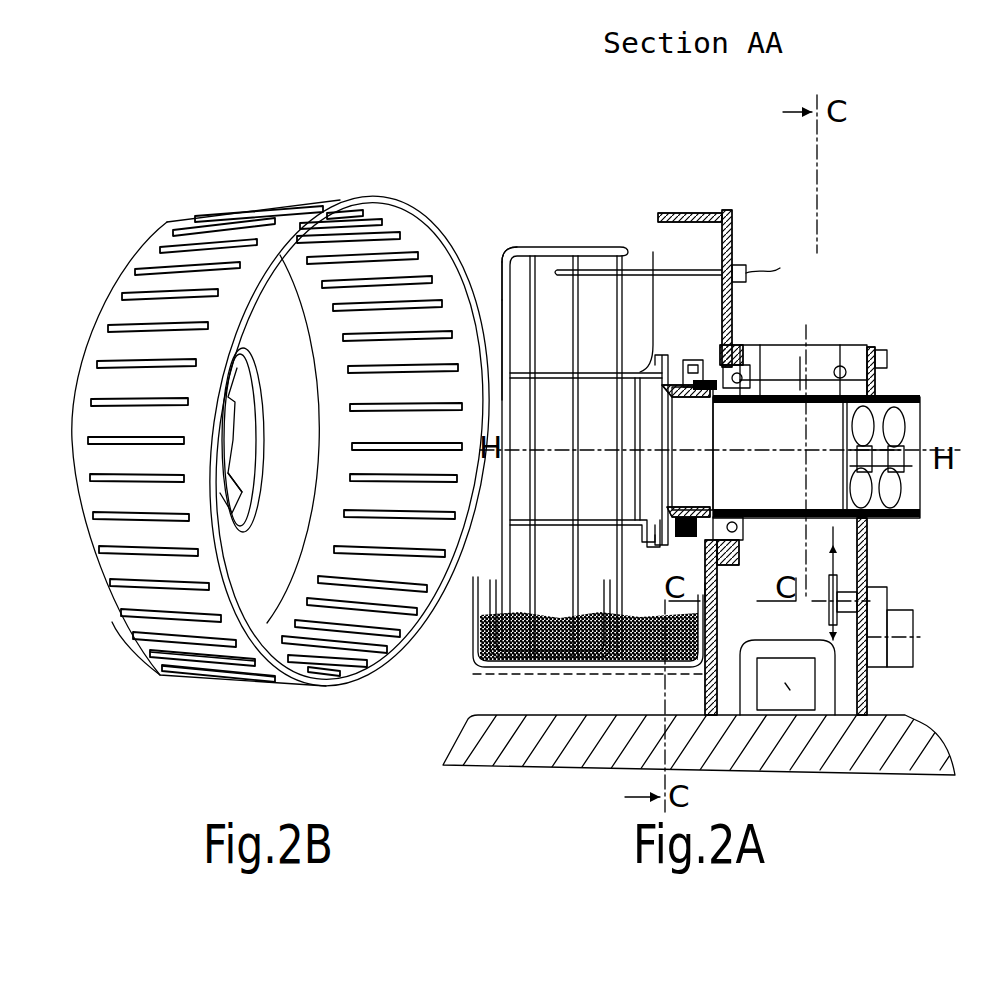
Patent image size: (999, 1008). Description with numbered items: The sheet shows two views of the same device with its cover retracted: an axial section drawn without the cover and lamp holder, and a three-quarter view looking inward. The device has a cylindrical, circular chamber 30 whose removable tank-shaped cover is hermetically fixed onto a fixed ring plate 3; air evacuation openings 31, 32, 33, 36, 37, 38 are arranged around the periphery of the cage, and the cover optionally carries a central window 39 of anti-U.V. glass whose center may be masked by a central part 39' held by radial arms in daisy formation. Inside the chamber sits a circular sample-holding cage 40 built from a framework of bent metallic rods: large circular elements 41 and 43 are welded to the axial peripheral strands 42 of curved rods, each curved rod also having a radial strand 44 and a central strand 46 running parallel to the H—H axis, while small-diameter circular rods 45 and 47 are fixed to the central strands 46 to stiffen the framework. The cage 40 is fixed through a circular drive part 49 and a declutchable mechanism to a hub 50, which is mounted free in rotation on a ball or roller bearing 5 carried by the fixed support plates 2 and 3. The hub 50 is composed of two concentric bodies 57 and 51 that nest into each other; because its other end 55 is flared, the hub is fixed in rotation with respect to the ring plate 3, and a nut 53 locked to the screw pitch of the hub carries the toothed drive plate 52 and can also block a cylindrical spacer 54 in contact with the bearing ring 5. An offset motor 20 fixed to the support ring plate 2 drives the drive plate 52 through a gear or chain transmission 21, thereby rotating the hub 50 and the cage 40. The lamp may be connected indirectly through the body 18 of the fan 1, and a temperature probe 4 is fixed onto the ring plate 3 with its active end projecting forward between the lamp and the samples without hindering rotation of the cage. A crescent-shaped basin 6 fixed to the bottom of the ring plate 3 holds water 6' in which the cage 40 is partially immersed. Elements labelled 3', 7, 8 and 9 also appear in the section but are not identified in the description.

In FIG. 2A, the fan 1 is at (892, 498).
In FIG. 2A, the fixed support ring plate 2 is at (873, 355).
In FIG. 2A, the fixed ring plate 3 is at (767, 239).
In FIG. 2A, the support plate 3' is at (704, 237).
In FIG. 2A, the temperature probe 4 is at (653, 252).
In FIG. 2A, the ball or roller bearing 5 is at (753, 547).
In FIG. 2A, the crescent-shaped basin 6 is at (558, 693).
In FIG. 2A, the water 6' is at (550, 696).
In FIG. 2A, the base opening 7 is at (785, 683).
In FIG. 2A, the base window 8 is at (787, 683).
In FIG. 2A, the base frame 9 is at (788, 683).
In FIG. 2A, the body of the fan 18 is at (921, 420).
In FIG. 2A, the offset motor 20 is at (905, 667).
In FIG. 2A, the gear or chain transmission 21 is at (843, 580).
In FIG. 2B, the cylindrical and circular chamber 30 is at (330, 200).
In FIG. 2B, the air evacuation opening 31 is at (196, 215).
In FIG. 2B, the air evacuation opening 32 is at (173, 230).
In FIG. 2B, the air evacuation opening 33 is at (160, 248).
In FIG. 2B, the air evacuation opening 36 is at (117, 630).
In FIG. 2B, the air evacuation opening 37 is at (145, 653).
In FIG. 2B, the air evacuation opening 38 is at (160, 668).
In FIG. 2B, the central window 39 is at (266, 439).
In FIG. 2B, the central part 39' is at (276, 444).
In FIG. 2A, the sample-holding cage 40 is at (500, 252).
In FIG. 2A, the circular element 41 is at (521, 258).
In FIG. 2A, the peripheral strand 42 is at (566, 242).
In FIG. 2A, the circular element 43 is at (503, 266).
In FIG. 2A, the radial strand 44 is at (505, 315).
In FIG. 2A, the small diameter circular rod 45 is at (512, 378).
In FIG. 2A, the central strand 46 is at (545, 520).
In FIG. 2A, the small diameter circular rod 47 is at (625, 483).
In FIG. 2A, the circular drive part 49 is at (677, 385).
In FIG. 2A, the hub 50 is at (745, 300).
In FIG. 2A, the concentric body of the hub 51 is at (755, 357).
In FIG. 2A, the toothed drive plate 52 is at (852, 357).
In FIG. 2A, the nut 53 is at (838, 355).
In FIG. 2A, the cylindrical spacer 54 is at (800, 357).
In FIG. 2A, the flared end of the hub 55 is at (727, 330).
In FIG. 2A, the body of the hub 57 is at (693, 352).